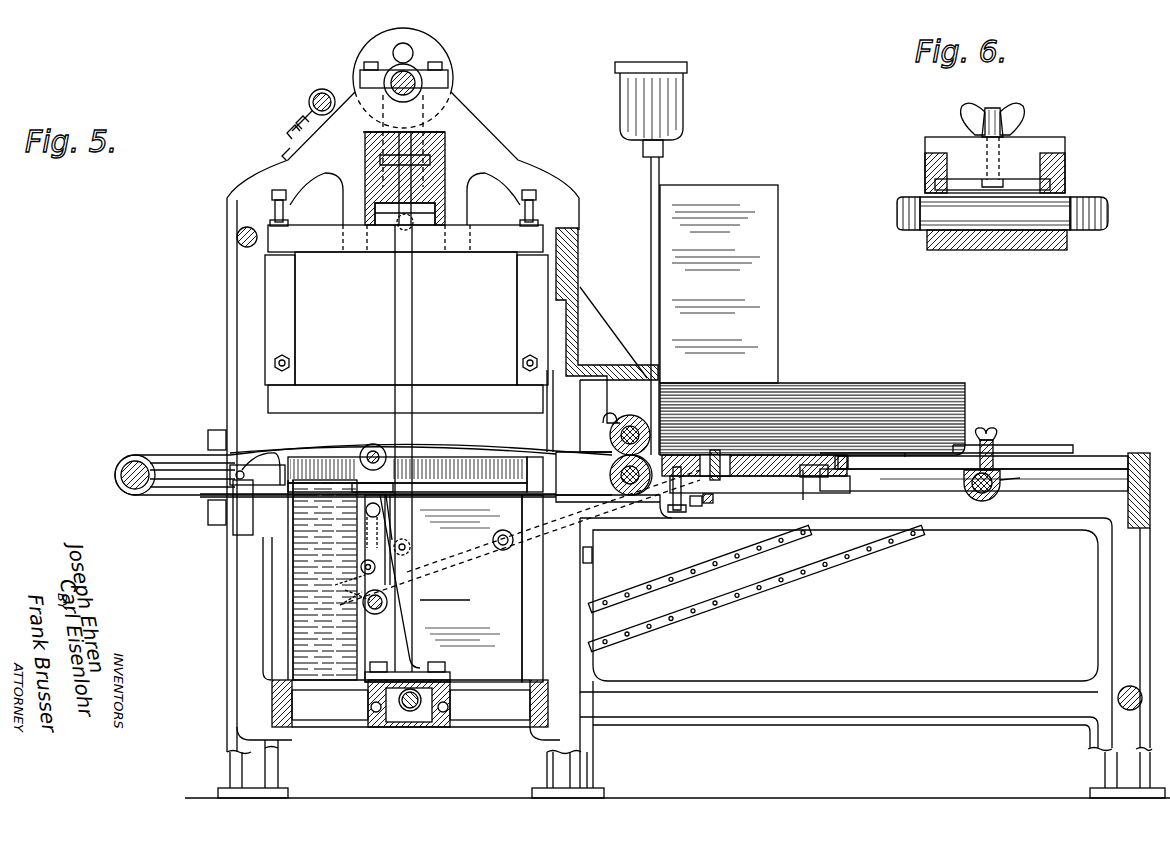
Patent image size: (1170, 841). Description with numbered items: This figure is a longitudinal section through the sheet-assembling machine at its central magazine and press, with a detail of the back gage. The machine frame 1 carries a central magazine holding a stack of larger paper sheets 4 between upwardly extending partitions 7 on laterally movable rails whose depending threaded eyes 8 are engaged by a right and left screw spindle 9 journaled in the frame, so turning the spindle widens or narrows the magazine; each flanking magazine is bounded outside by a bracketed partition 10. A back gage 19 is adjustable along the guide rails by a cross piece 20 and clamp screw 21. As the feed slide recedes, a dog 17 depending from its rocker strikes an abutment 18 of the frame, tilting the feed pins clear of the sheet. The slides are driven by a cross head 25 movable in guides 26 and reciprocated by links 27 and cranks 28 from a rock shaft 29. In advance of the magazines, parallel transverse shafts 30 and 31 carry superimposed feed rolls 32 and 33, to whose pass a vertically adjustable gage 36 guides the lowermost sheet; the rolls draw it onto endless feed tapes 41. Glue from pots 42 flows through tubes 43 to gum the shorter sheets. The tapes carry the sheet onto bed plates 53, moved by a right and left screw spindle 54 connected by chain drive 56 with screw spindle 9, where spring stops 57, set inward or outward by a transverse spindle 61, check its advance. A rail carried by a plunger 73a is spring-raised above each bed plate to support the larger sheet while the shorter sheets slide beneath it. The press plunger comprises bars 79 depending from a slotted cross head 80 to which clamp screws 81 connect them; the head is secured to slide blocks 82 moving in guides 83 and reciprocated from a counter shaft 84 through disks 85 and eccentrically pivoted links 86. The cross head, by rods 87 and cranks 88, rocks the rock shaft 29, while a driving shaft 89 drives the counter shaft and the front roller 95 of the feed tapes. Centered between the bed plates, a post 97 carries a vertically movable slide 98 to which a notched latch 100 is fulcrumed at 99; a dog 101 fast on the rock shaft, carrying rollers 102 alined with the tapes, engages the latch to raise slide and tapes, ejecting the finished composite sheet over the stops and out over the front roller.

In FIG. 5, the machine frame 1 is at (974, 486).
In FIG. 5, the larger paper sheets 4 is at (940, 385).
In FIG. 5, the plates or partitions 7 is at (778, 325).
In FIG. 5, the threaded eyes 8 is at (966, 490).
In FIG. 6, the threaded eyes 8 is at (1035, 250).
In FIG. 5, the right and left screw spindle 9 is at (1000, 492).
In FIG. 6, the right and left screw spindle 9 is at (985, 250).
In FIG. 5, the bracketed plate or partition 10 is at (681, 470).
In FIG. 5, the dog 17 is at (700, 503).
In FIG. 5, the abutment 18 is at (720, 500).
In FIG. 5, the back gage 19 is at (970, 418).
In FIG. 6, the back gage 19 is at (995, 165).
In FIG. 5, the cross piece 20 is at (1000, 452).
In FIG. 6, the cross piece 20 is at (1052, 184).
In FIG. 5, the clamp screw 21 is at (992, 432).
In FIG. 6, the clamp screw 21 is at (1000, 106).
In FIG. 5, the cross head 25 is at (754, 472).
In FIG. 5, the guides 26 is at (814, 491).
In FIG. 5, the links 27 is at (585, 520).
In FIG. 5, the cranks 28 is at (322, 580).
In FIG. 5, the rock shaft 29 is at (444, 607).
In FIG. 5, the transverse shaft 30 is at (619, 435).
In FIG. 5, the transverse shaft 31 is at (619, 475).
In FIG. 5, the feed roll 32 is at (612, 445).
In FIG. 5, the feed roll 33 is at (586, 432).
In FIG. 5, the vertically adjustable gage 36 is at (656, 300).
In FIG. 5, the endless feed tapes 41 is at (448, 497).
In FIG. 5, the pots 42 is at (684, 110).
In FIG. 5, the tubes 43 is at (660, 175).
In FIG. 5, the bed plates 53 is at (454, 588).
In FIG. 5, the right and left screw spindle 54 is at (408, 720).
In FIG. 5, the chain drive 56 is at (693, 568).
In FIG. 5, the spring stops or abutments 57 is at (262, 454).
In FIG. 5, the transverse spindle 61 is at (502, 550).
In FIG. 5, the plunger 73a is at (556, 500).
In FIG. 5, the bars 79 is at (405, 399).
In FIG. 5, the slotted cross head 80 is at (440, 200).
In FIG. 5, the clamp screws 81 is at (416, 158).
In FIG. 5, the slide blocks 82 is at (412, 180).
In FIG. 5, the guides 83 is at (350, 206).
In FIG. 5, the counter shaft 84 is at (418, 80).
In FIG. 5, the disks 85 is at (410, 48).
In FIG. 5, the eccentrically pivoted links 86 is at (425, 96).
In FIG. 5, the rods 87 is at (412, 300).
In FIG. 5, the cranks 88 is at (520, 537).
In FIG. 5, the driving shaft 89 is at (327, 92).
In FIG. 5, the front roller 95 is at (132, 495).
In FIG. 5, the post 97 is at (396, 581).
In FIG. 5, the slide 98 is at (395, 458).
In FIG. 5, the fulcrum 99 is at (362, 520).
In FIG. 5, the notched latch 100 is at (360, 560).
In FIG. 5, the dog 101 is at (345, 600).
In FIG. 5, the rollers 102 is at (373, 444).